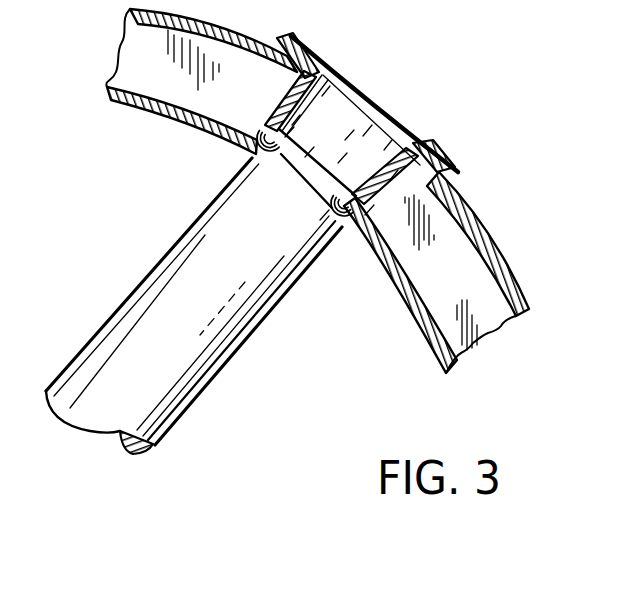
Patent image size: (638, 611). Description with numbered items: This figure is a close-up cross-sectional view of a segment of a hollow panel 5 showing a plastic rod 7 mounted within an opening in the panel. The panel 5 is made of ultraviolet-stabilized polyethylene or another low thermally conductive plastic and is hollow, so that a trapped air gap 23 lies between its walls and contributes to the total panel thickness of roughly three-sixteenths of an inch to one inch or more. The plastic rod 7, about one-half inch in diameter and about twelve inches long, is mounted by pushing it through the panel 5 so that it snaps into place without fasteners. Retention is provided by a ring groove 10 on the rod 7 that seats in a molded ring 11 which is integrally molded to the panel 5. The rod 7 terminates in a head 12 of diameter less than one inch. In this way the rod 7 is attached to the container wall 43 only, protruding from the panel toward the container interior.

The panel 5 is at (176, 113).
The plastic rod 7 is at (136, 293).
The ring groove 10 is at (270, 166).
The molded ring 11 is at (344, 220).
The head 12 is at (373, 92).
The trapped air gap 23 is at (490, 322).
The container wall 43 is at (396, 293).